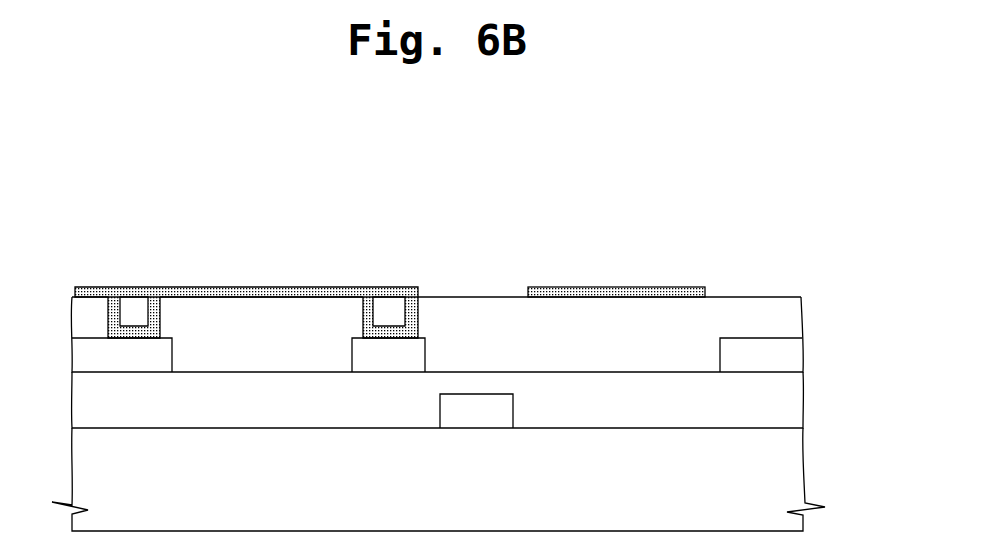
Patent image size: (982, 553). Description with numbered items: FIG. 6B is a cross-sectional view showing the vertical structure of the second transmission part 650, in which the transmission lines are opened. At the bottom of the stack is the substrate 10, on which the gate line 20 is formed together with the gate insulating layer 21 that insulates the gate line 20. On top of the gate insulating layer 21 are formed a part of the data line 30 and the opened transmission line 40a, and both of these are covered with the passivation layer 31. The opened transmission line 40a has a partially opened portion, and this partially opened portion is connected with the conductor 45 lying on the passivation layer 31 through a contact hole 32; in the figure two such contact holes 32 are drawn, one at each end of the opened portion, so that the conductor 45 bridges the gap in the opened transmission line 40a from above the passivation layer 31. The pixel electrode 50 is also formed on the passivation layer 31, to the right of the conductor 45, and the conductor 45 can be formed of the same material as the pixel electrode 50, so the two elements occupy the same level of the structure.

The second transmission part 650 is at (196, 176).
The substrate 10 is at (794, 480).
The gate line 20 is at (475, 422).
The gate insulating layer 21 is at (794, 404).
The data line 30 is at (794, 357).
The passivation layer 31 is at (794, 318).
The contact hole 32 is at (147, 312).
The opened transmission line 40a is at (123, 362).
The conductor 45 is at (248, 287).
The pixel electrode 50 is at (611, 287).